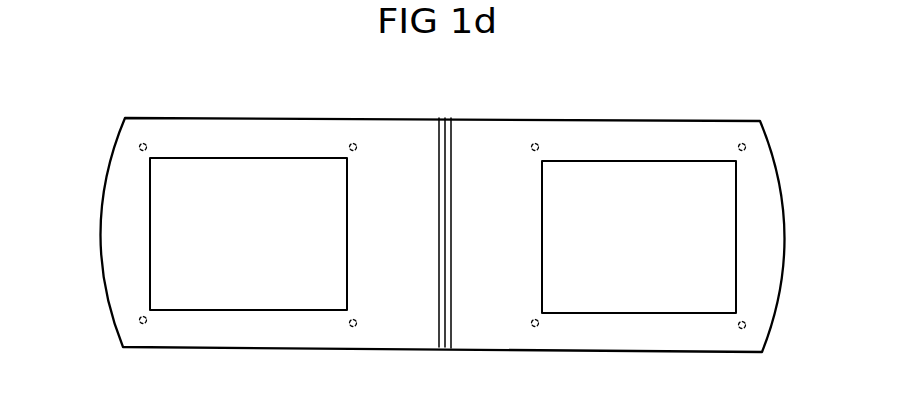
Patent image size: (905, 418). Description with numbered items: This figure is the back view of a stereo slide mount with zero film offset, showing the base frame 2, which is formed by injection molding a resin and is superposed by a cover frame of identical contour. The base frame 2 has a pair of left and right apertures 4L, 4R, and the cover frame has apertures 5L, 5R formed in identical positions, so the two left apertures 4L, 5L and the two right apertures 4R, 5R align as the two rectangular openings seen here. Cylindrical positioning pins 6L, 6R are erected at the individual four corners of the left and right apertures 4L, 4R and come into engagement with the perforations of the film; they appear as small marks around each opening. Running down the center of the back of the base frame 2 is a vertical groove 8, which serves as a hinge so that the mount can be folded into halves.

The base frame 2 is at (128, 180).
The left aperture 4L is at (248, 191).
The left aperture 5L is at (297, 158).
The right aperture 4R is at (639, 192).
The right aperture 5R is at (657, 161).
The positioning pins 6L is at (143, 142).
The positioning pins 6R is at (537, 142).
The vertical groove 8 is at (448, 162).